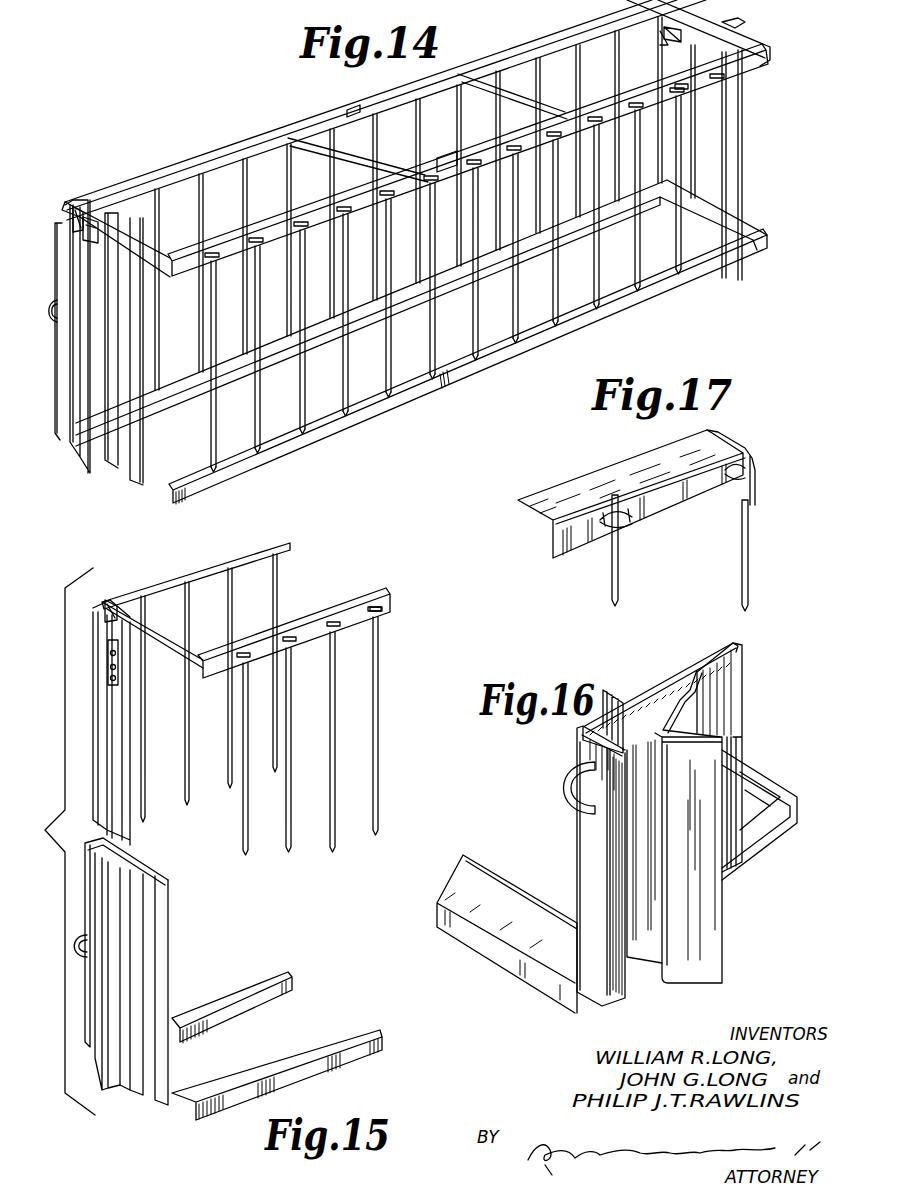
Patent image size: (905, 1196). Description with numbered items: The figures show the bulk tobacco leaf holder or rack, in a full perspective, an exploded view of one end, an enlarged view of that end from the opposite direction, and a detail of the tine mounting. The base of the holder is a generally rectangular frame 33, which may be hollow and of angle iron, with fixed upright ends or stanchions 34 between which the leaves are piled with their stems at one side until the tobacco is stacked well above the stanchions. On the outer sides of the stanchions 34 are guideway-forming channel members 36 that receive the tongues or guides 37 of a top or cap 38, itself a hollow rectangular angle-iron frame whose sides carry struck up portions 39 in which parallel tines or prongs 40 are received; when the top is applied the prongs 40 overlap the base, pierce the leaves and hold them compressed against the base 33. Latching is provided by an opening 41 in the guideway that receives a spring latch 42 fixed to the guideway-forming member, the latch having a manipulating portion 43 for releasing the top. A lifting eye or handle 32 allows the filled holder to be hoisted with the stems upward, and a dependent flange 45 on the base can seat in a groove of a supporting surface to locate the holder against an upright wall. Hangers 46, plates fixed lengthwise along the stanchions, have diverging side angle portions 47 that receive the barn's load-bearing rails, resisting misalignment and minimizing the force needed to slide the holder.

In FIG. 14, the handle 32 is at (53, 320).
In FIG. 15, the handle 32 is at (87, 952).
In FIG. 16, the handle 32 is at (565, 790).
In FIG. 14, the rectangular frame 33 is at (583, 320).
In FIG. 15, the rectangular frame 33 is at (263, 983).
In FIG. 16, the rectangular frame 33 is at (747, 765).
In FIG. 14, the upright ends or stanchions 34 is at (733, 125).
In FIG. 15, the upright ends or stanchions 34 is at (165, 965).
In FIG. 16, the upright ends or stanchions 34 is at (663, 680).
In FIG. 14, the guideway-forming channel members 36 is at (62, 438).
In FIG. 15, the guideway-forming channel members 36 is at (87, 1020).
In FIG. 16, the guideway-forming channel members 36 is at (587, 842).
In FIG. 14, the tongues or guides 37 is at (104, 232).
In FIG. 15, the tongues or guides 37 is at (127, 757).
In FIG. 14, the top or cap 38 is at (207, 160).
In FIG. 15, the top or cap 38 is at (258, 553).
In FIG. 17, the top or cap 38 is at (583, 480).
In FIG. 14, the struck up portions 39 is at (685, 90).
In FIG. 15, the struck up portions 39 is at (335, 620).
In FIG. 17, the struck up portions 39 is at (630, 508).
In FIG. 14, the tines or prongs 40 is at (230, 197).
In FIG. 15, the tines or prongs 40 is at (370, 680).
In FIG. 17, the tines or prongs 40 is at (748, 530).
In FIG. 14, the opening 41 is at (664, 44).
In FIG. 15, the opening 41 is at (110, 643).
In FIG. 14, the spring latch 42 is at (661, 33).
In FIG. 14, the manipulating portion 43 is at (78, 212).
In FIG. 15, the manipulating portion 43 is at (108, 608).
In FIG. 16, the dependent flange 45 is at (473, 948).
In FIG. 14, the hangers 46 is at (107, 428).
In FIG. 15, the hangers 46 is at (137, 923).
In FIG. 16, the hangers 46 is at (713, 690).
In FIG. 14, the diverging side angle portions 47 is at (733, 20).
In FIG. 15, the diverging side angle portions 47 is at (100, 880).
In FIG. 16, the diverging side angle portions 47 is at (712, 907).